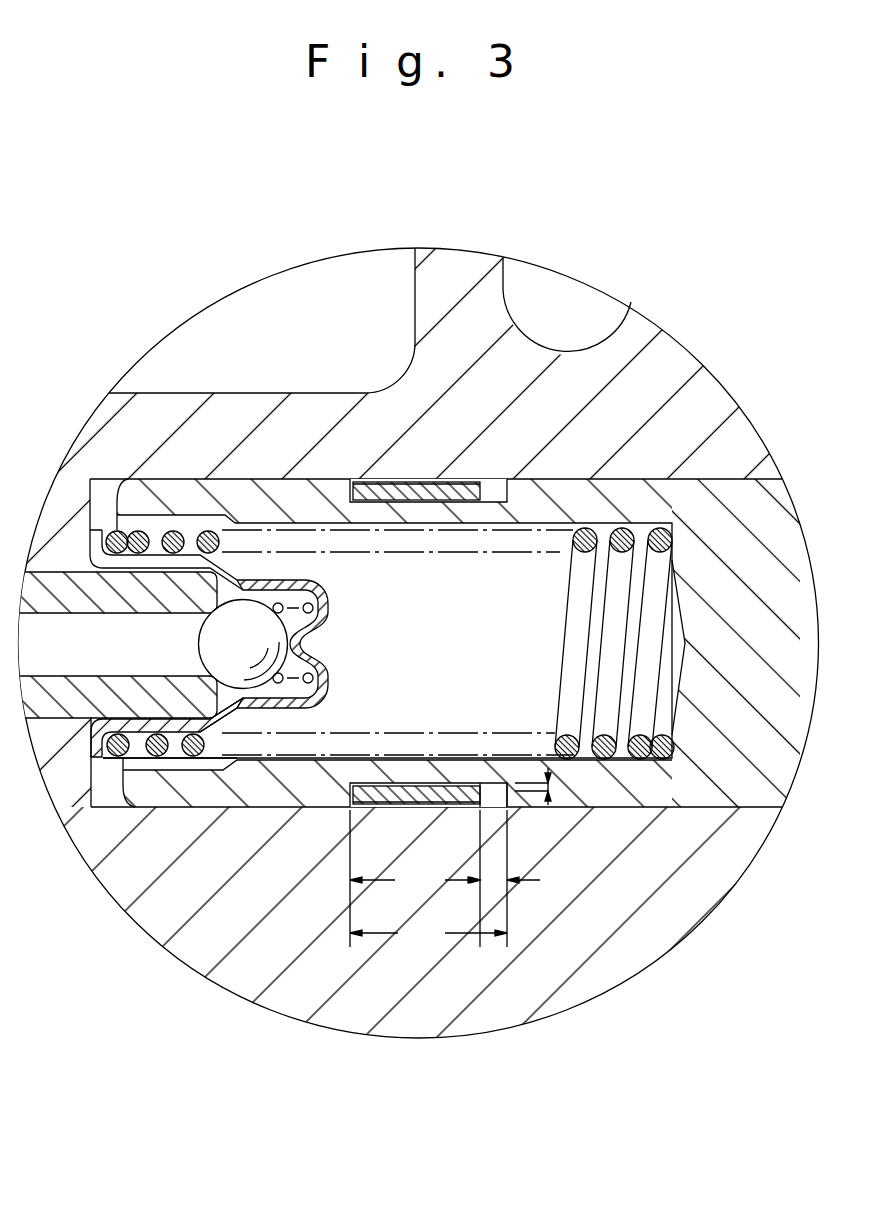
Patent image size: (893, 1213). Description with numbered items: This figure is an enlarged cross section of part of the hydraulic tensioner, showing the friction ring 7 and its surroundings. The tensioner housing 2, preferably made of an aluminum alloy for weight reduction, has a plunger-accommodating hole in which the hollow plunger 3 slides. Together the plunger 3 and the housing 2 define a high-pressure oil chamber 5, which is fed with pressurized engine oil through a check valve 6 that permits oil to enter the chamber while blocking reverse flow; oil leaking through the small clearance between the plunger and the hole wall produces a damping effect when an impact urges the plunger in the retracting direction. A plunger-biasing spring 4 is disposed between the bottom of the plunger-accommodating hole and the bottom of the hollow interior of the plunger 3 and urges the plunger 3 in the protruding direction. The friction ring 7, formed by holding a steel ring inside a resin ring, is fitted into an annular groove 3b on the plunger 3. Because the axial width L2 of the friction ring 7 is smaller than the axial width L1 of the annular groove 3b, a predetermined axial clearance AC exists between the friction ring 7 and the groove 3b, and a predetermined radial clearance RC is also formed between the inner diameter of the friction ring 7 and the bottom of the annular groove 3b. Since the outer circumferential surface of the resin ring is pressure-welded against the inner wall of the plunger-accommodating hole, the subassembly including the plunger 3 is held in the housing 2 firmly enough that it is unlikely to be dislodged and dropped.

The tensioner housing 2 is at (267, 393).
The plunger 3 is at (228, 487).
The annular groove 3b is at (508, 806).
The plunger-biasing spring 4 is at (173, 531).
The high-pressure oil chamber 5 is at (454, 651).
The check valve 6 is at (331, 579).
The friction ring 7 is at (400, 479).
The radial clearance RC is at (555, 786).
The axial clearance AC is at (492, 880).
The axial width of the annular groove L1 is at (428, 881).
The axial width of the friction ring L2 is at (415, 878).